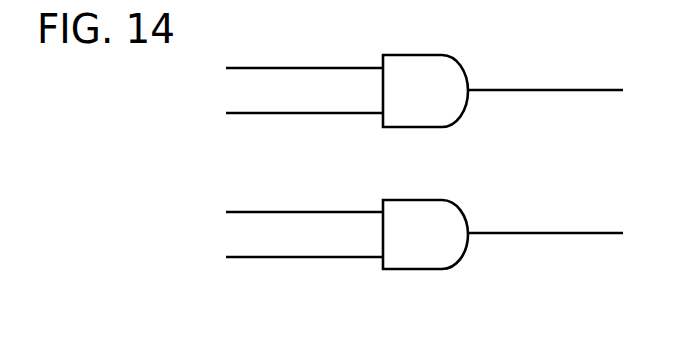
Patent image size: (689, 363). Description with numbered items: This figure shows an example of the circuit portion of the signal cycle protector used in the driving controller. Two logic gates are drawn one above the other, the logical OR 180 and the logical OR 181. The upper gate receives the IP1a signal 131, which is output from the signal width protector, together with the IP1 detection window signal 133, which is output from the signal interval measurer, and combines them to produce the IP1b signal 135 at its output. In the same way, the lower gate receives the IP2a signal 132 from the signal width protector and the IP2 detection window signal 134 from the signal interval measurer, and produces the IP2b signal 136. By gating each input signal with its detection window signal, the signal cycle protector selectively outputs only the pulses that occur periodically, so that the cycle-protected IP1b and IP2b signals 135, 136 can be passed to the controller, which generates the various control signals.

The IP1a signal 131 is at (317, 67).
The IP2a signal 132 is at (317, 211).
The IP1 detection window signal 133 is at (317, 112).
The IP2 detection window signal 134 is at (317, 256).
The IP1b signal 135 is at (557, 89).
The IP2b signal 136 is at (558, 232).
The logical OR 180 is at (413, 55).
The logical OR 181 is at (413, 200).